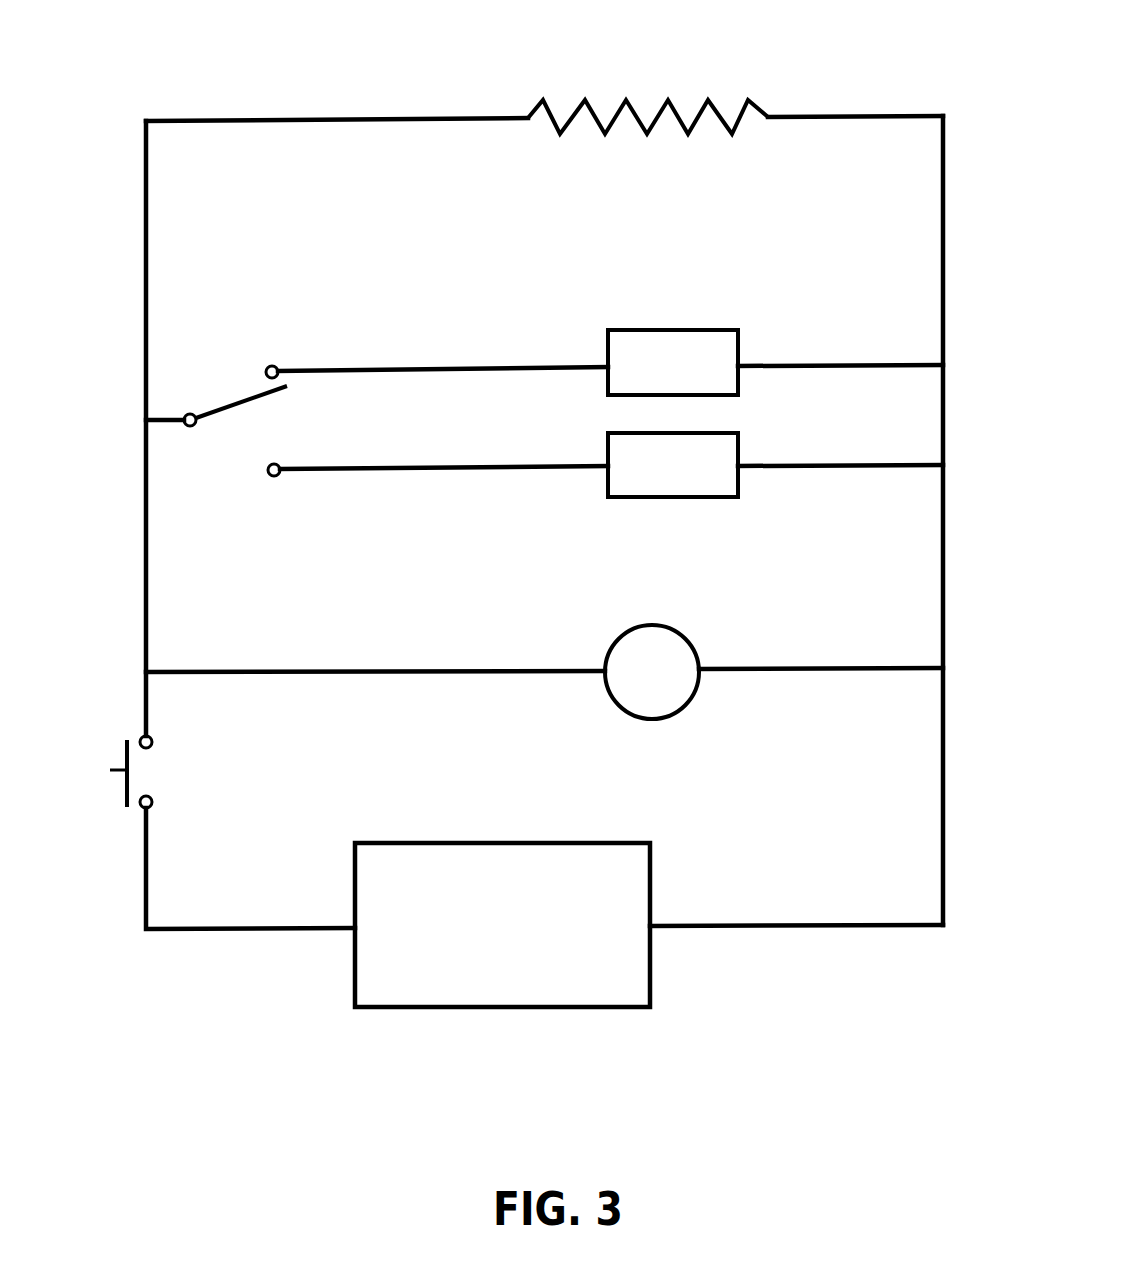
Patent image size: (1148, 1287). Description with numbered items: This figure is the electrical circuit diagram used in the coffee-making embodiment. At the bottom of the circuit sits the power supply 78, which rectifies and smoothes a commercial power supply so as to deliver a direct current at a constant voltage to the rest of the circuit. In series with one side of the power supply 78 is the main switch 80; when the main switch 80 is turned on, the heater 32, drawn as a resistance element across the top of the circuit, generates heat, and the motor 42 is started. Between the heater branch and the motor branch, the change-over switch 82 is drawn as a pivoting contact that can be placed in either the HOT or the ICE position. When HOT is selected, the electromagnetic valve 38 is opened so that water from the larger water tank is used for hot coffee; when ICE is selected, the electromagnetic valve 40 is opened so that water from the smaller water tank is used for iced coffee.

The heater 32 is at (690, 103).
The electromagnetic valve 38 is at (685, 330).
The electromagnetic valve 40 is at (705, 497).
The motor 42 is at (658, 722).
The power supply 78 is at (495, 1008).
The main switch 80 is at (120, 808).
The change-over switch 82 is at (243, 466).